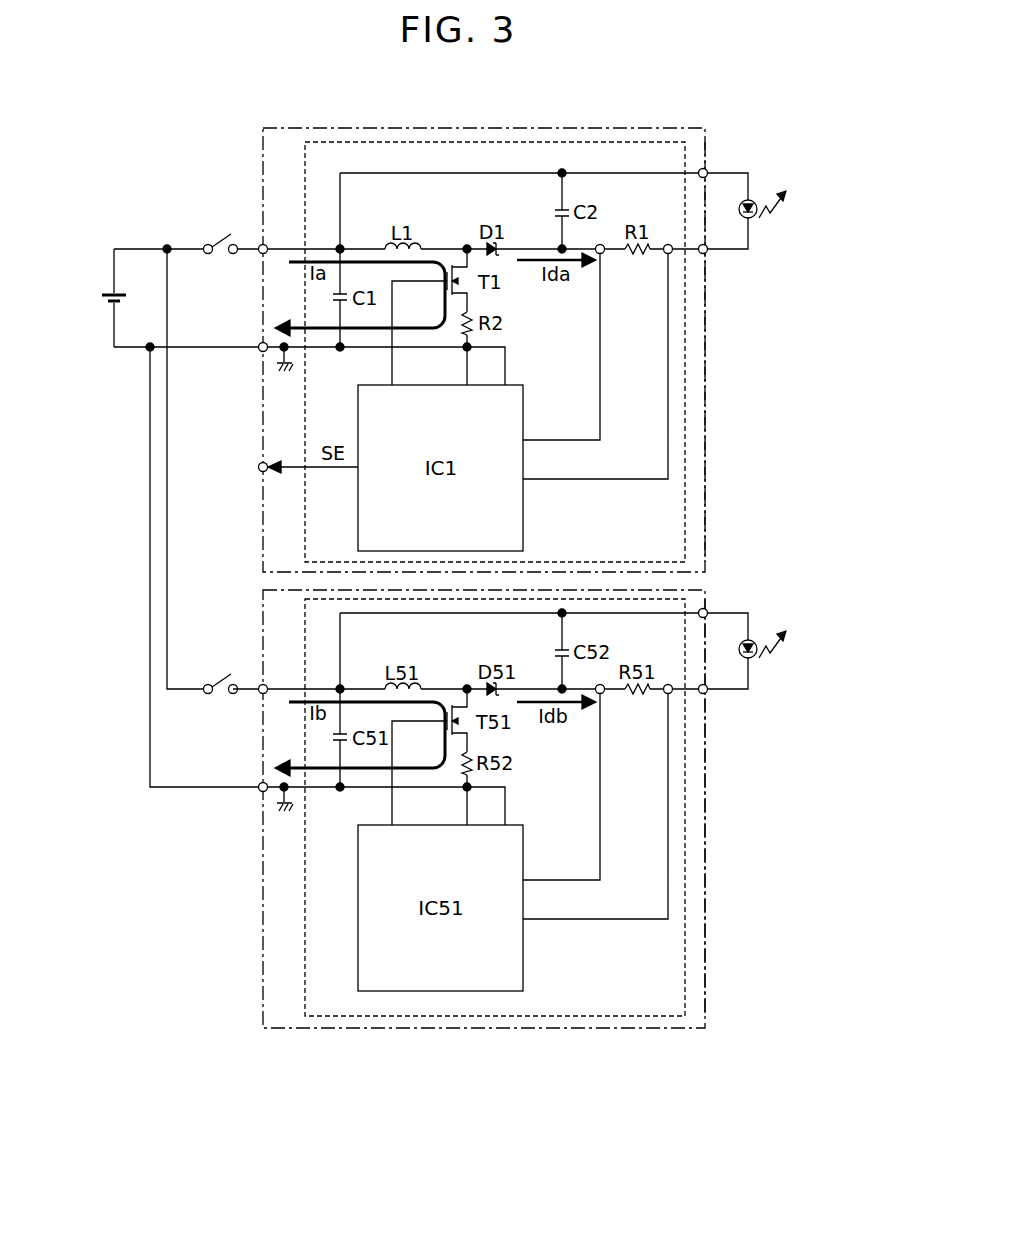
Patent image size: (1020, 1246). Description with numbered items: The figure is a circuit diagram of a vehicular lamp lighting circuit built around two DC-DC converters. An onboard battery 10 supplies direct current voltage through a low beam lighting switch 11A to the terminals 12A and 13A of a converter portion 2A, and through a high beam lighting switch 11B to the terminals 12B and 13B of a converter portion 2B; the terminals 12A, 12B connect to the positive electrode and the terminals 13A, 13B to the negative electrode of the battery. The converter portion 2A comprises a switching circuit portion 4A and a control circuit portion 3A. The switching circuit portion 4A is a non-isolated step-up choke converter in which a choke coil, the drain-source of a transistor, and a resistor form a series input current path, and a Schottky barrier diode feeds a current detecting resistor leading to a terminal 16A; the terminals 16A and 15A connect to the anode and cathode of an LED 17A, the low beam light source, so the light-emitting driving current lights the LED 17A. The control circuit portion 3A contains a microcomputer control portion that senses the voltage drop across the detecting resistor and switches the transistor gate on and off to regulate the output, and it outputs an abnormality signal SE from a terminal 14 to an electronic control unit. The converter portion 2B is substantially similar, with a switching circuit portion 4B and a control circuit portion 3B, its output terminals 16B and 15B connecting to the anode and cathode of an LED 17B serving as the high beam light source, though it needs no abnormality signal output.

The onboard battery 10 is at (107, 290).
The low beam lighting switch 11A is at (214, 237).
The terminal 12A is at (260, 245).
The terminal 13A is at (259, 345).
The terminal 14 is at (259, 466).
The converter portion 2A is at (368, 127).
The control circuit portion 3A is at (687, 445).
The switching circuit portion 4A is at (688, 305).
The terminal 15A is at (705, 168).
The terminal 16A is at (708, 253).
The LED 17A is at (752, 200).
The high beam lighting switch 11B is at (207, 659).
The terminal 12B is at (241, 648).
The terminal 13B is at (224, 814).
The converter portion 2B is at (315, 1030).
The control circuit portion 3B is at (688, 885).
The switching circuit portion 4B is at (688, 757).
The terminal 15B is at (735, 588).
The terminal 16B is at (742, 716).
The LED 17B is at (771, 617).